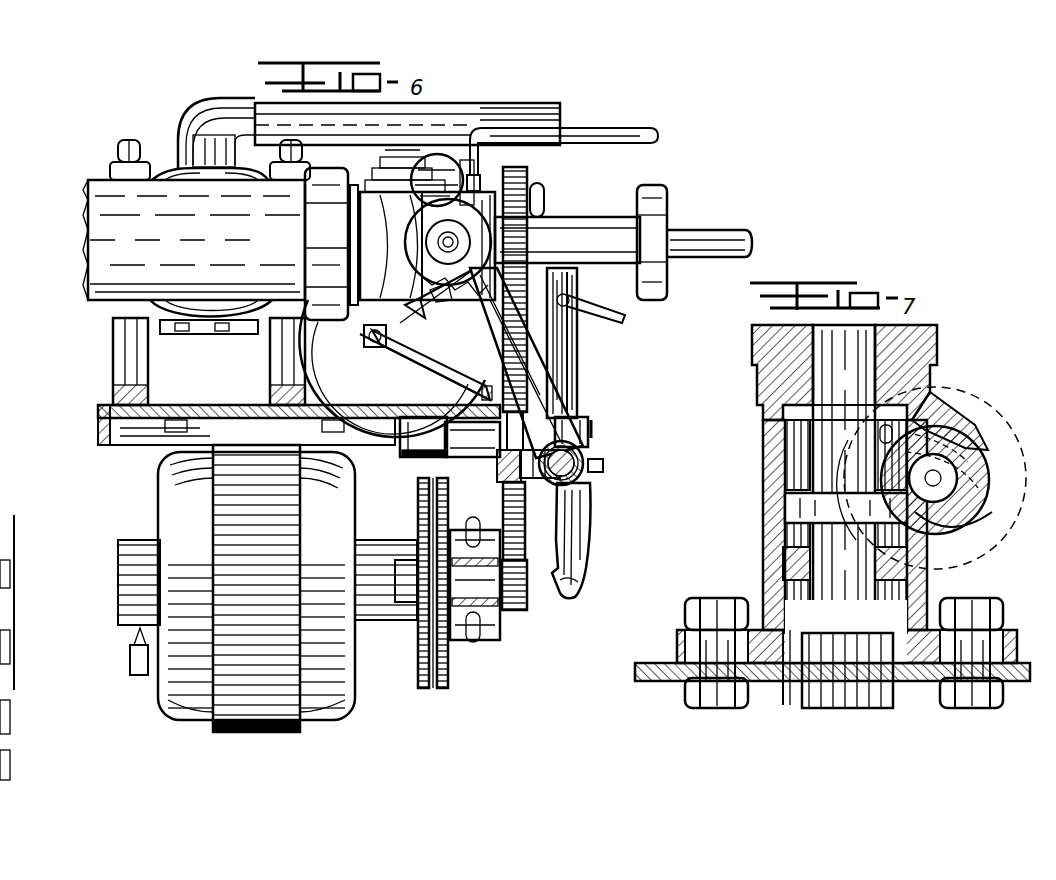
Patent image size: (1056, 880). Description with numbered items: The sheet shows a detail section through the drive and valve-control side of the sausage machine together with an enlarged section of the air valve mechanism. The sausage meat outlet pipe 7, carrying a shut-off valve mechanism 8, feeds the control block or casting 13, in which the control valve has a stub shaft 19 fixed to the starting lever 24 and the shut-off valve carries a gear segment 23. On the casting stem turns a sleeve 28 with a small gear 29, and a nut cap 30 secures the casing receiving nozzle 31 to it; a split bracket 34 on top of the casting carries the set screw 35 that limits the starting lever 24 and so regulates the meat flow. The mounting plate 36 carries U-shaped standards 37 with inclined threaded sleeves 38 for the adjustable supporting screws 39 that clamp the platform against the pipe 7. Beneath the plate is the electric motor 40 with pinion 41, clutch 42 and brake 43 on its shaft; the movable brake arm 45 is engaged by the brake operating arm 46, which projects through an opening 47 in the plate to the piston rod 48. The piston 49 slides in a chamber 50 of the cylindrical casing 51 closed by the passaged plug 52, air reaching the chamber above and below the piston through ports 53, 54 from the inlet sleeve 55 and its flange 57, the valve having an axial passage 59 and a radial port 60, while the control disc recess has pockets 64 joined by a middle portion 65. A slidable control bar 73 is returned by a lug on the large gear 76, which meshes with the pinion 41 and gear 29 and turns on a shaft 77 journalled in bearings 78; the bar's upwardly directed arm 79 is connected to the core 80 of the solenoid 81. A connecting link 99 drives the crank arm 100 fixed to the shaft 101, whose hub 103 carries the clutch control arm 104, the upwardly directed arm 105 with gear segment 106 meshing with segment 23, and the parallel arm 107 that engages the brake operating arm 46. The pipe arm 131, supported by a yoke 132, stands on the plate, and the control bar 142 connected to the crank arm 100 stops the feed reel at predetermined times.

In FIG. 6, the sausage meat outlet pipe 7 is at (118, 234).
In FIG. 6, the shut-off valve mechanism 8 is at (200, 128).
In FIG. 6, the sausage meat control block or casting 13 is at (427, 225).
In FIG. 6, the stub shaft 19 is at (410, 152).
In FIG. 6, the gear segment 23 is at (410, 264).
In FIG. 6, the starting lever 24 is at (640, 128).
In FIG. 6, the sleeve 28 is at (600, 216).
In FIG. 6, the small gear 29 is at (530, 180).
In FIG. 6, the nut cap 30 is at (667, 192).
In FIG. 6, the sausage casing receiving pipe or nozzle 31 is at (730, 230).
In FIG. 6, the split bracket 34 is at (485, 178).
In FIG. 6, the set screw 35 is at (448, 132).
In FIG. 6, the mounting plate or platform 36 is at (150, 432).
In FIG. 7, the mounting plate or platform 36 is at (662, 684).
In FIG. 6, the U-shaped brackets or standards 37 is at (113, 374).
In FIG. 6, the internally threaded sleeves 38 is at (110, 170).
In FIG. 6, the adjustable supporting screws 39 is at (118, 148).
In FIG. 6, the electric motor 40 is at (160, 582).
In FIG. 6, the pinion 41 is at (512, 612).
In FIG. 6, the clutch 42 is at (420, 690).
In FIG. 6, the brake 43 is at (490, 642).
In FIG. 6, the movable arm 45 is at (522, 548).
In FIG. 7, the brake operating arm 46 is at (877, 700).
In FIG. 7, the opening 47 is at (790, 692).
In FIG. 7, the piston rod or stem 48 is at (830, 564).
In FIG. 7, the piston 49 is at (785, 502).
In FIG. 7, the chamber 50 is at (786, 464).
In FIG. 7, the cylindrical casing 51 is at (766, 440).
In FIG. 7, the axially passaged cap or plug 52 is at (770, 342).
In FIG. 7, the compressed air port 53 is at (945, 560).
In FIG. 7, the compressed air port 54 is at (930, 400).
In FIG. 7, the compressed air inlet sleeve 55 is at (972, 436).
In FIG. 7, the integral flange 57 is at (967, 504).
In FIG. 7, the axial passage 59 is at (958, 472).
In FIG. 7, the radial port or passage 60 is at (846, 474).
In FIG. 7, the arms or pockets 64 is at (990, 396).
In FIG. 7, the enlarged middle portion 65 is at (985, 452).
In FIG. 6, the slidable control bar 73 is at (462, 458).
In FIG. 6, the large gear 76 is at (578, 342).
In FIG. 6, the shaft 77 is at (596, 430).
In FIG. 6, the bearings 78 is at (592, 416).
In FIG. 6, the upwardly directed arm 79 is at (415, 374).
In FIG. 6, the core 80 is at (370, 346).
In FIG. 6, the solenoid 81 is at (355, 332).
In FIG. 6, the connecting link 99 is at (532, 260).
In FIG. 6, the crank arm 100 is at (578, 320).
In FIG. 6, the shaft 101 is at (600, 464).
In FIG. 6, the hub or sleeve 103 is at (585, 482).
In FIG. 6, the clutch control arm 104 is at (590, 546).
In FIG. 6, the upwardly directed arm 105 is at (530, 374).
In FIG. 6, the gear segment 106 is at (445, 297).
In FIG. 6, the parallel arm 107 is at (498, 482).
In FIG. 6, the pipe arm 131 is at (540, 103).
In FIG. 6, the yoke 132 is at (498, 104).
In FIG. 6, the control bar 142 is at (628, 322).